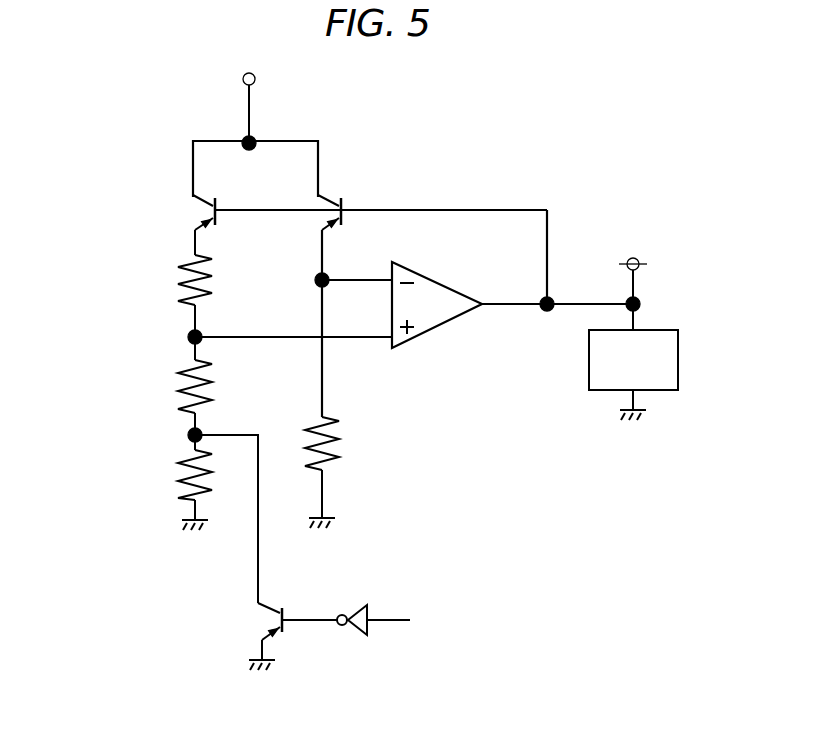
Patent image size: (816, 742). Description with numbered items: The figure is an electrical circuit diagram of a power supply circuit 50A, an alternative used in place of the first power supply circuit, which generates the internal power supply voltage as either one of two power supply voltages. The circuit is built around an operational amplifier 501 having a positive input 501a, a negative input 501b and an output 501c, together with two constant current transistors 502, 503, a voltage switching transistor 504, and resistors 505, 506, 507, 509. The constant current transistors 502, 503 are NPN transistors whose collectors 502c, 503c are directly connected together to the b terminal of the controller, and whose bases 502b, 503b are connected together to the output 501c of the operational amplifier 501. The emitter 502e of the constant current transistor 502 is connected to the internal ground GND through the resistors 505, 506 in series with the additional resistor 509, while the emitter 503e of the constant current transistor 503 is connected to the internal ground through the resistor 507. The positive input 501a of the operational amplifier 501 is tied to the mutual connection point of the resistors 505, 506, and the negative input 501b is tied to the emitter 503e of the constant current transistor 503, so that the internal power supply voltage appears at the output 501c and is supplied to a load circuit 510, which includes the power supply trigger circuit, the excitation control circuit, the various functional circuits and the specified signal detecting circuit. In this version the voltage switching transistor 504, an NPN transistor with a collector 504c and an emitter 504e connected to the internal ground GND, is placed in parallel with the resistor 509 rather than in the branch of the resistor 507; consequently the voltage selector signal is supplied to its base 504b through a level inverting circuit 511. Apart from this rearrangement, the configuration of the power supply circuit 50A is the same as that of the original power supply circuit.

The power supply circuit 50A is at (92, 365).
The operational amplifier 501 is at (434, 306).
The positive input 501a is at (355, 340).
The negative input 501b is at (357, 277).
The output 501c is at (506, 303).
The constant current transistor 502 is at (182, 204).
The base 502b is at (266, 213).
The collector 502c is at (198, 203).
The emitter 502e is at (192, 230).
The constant current transistor 503 is at (332, 218).
The base 503b is at (376, 209).
The collector 503c is at (326, 198).
The emitter 503e is at (320, 252).
The voltage switching transistor 504 is at (273, 622).
The base 504b is at (316, 618).
The collector 504c is at (268, 612).
The emitter 504e is at (268, 647).
The resistor 505 is at (178, 272).
The resistor 506 is at (180, 390).
The resistor 507 is at (340, 449).
The resistor 509 is at (182, 472).
The load circuit 510 is at (678, 355).
The level inverting circuit 511 is at (370, 628).